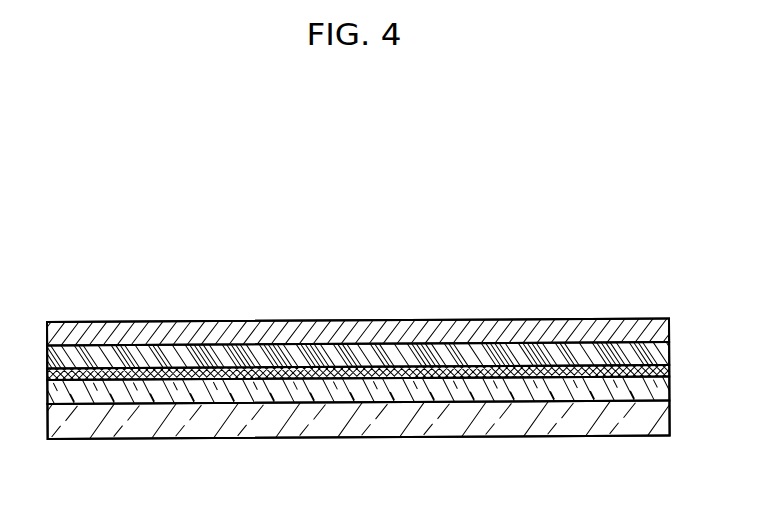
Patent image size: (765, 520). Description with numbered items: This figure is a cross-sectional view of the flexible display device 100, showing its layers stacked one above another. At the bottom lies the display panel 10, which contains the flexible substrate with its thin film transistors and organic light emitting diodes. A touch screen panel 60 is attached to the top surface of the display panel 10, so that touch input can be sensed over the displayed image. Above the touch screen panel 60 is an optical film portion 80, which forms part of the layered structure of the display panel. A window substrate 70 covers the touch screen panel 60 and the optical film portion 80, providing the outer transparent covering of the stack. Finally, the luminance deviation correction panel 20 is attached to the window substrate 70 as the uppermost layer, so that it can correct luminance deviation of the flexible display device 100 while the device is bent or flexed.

The flexible display device 100 is at (350, 150).
The display panel 10 is at (467, 418).
The luminance deviation correction panel 20 is at (520, 333).
The touch screen panel 60 is at (293, 390).
The window substrate 70 is at (375, 355).
The optical film portion 80 is at (185, 378).